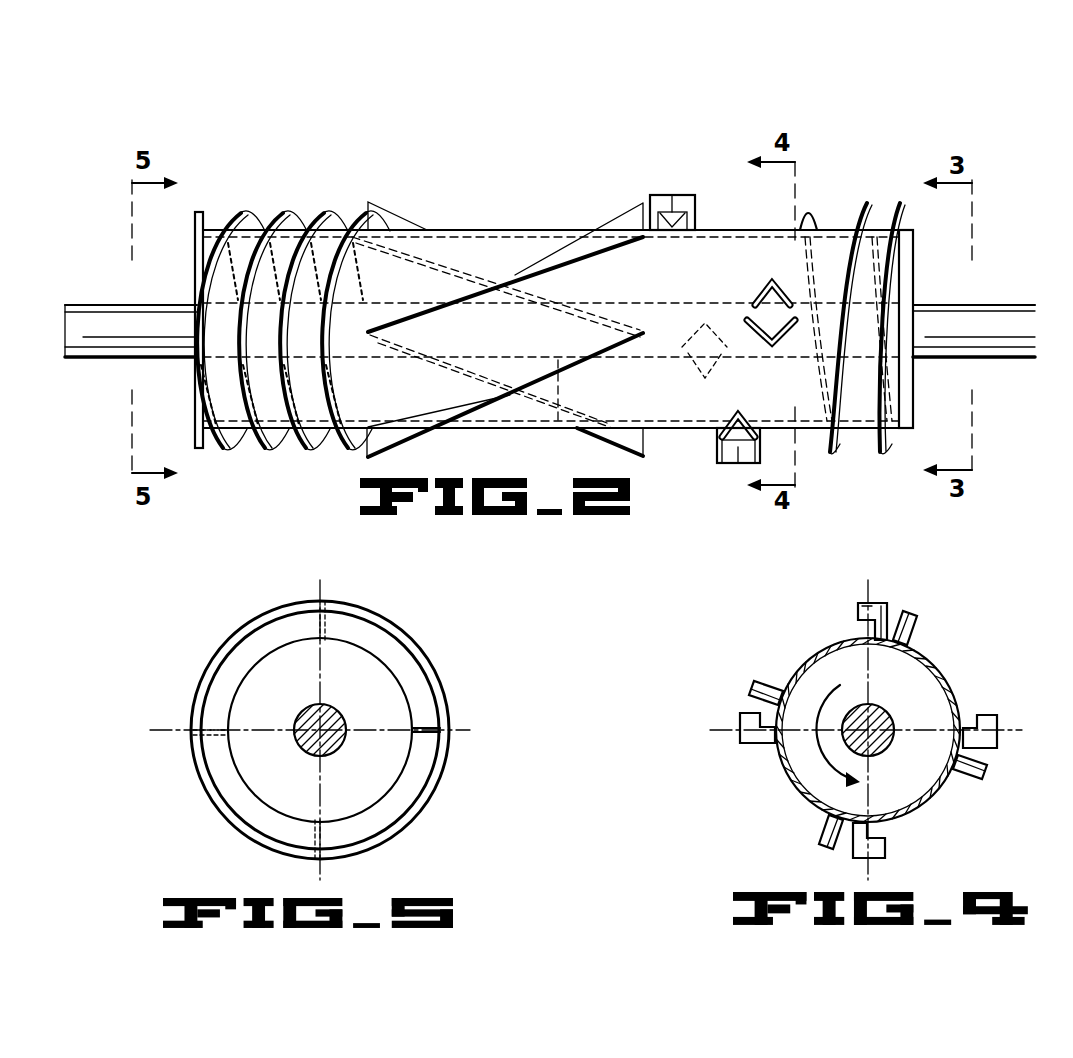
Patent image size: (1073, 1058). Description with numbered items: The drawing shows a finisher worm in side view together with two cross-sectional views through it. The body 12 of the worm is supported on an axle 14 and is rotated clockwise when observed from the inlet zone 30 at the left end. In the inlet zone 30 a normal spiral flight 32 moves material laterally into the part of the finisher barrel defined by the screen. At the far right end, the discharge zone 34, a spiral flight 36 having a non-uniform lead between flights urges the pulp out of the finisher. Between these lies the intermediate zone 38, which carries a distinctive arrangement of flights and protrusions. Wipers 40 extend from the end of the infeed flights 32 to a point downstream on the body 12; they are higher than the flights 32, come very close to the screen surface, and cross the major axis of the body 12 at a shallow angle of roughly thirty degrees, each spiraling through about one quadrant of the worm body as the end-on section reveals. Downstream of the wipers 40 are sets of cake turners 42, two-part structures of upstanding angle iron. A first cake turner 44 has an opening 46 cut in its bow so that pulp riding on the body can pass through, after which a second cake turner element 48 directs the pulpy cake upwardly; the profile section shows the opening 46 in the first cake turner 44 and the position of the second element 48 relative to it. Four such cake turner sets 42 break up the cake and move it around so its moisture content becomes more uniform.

In FIG. 2, the body 12 is at (485, 230).
In FIG. 5, the body 12 is at (238, 682).
In FIG. 4, the body 12 is at (957, 690).
In FIG. 2, the axle 14 is at (975, 303).
In FIG. 5, the axle 14 is at (295, 743).
In FIG. 2, the inlet zone 30 is at (290, 168).
In FIG. 2, the spiral flight 32 is at (323, 212).
In FIG. 5, the spiral flight 32 is at (255, 628).
In FIG. 2, the discharge zone 34 is at (893, 128).
In FIG. 2, the spiral flight 36 is at (862, 213).
In FIG. 2, the intermediate zone 38 is at (578, 187).
In FIG. 2, the wipers 40 is at (403, 220).
In FIG. 5, the wipers 40 is at (403, 632).
In FIG. 2, the cake turners 42 is at (662, 195).
In FIG. 2, the first cake turner 44 is at (786, 328).
In FIG. 4, the first cake turner 44 is at (872, 602).
In FIG. 2, the opening 46 is at (717, 460).
In FIG. 4, the opening 46 is at (866, 625).
In FIG. 2, the second cake turner element 48 is at (762, 292).
In FIG. 4, the second cake turner element 48 is at (918, 640).